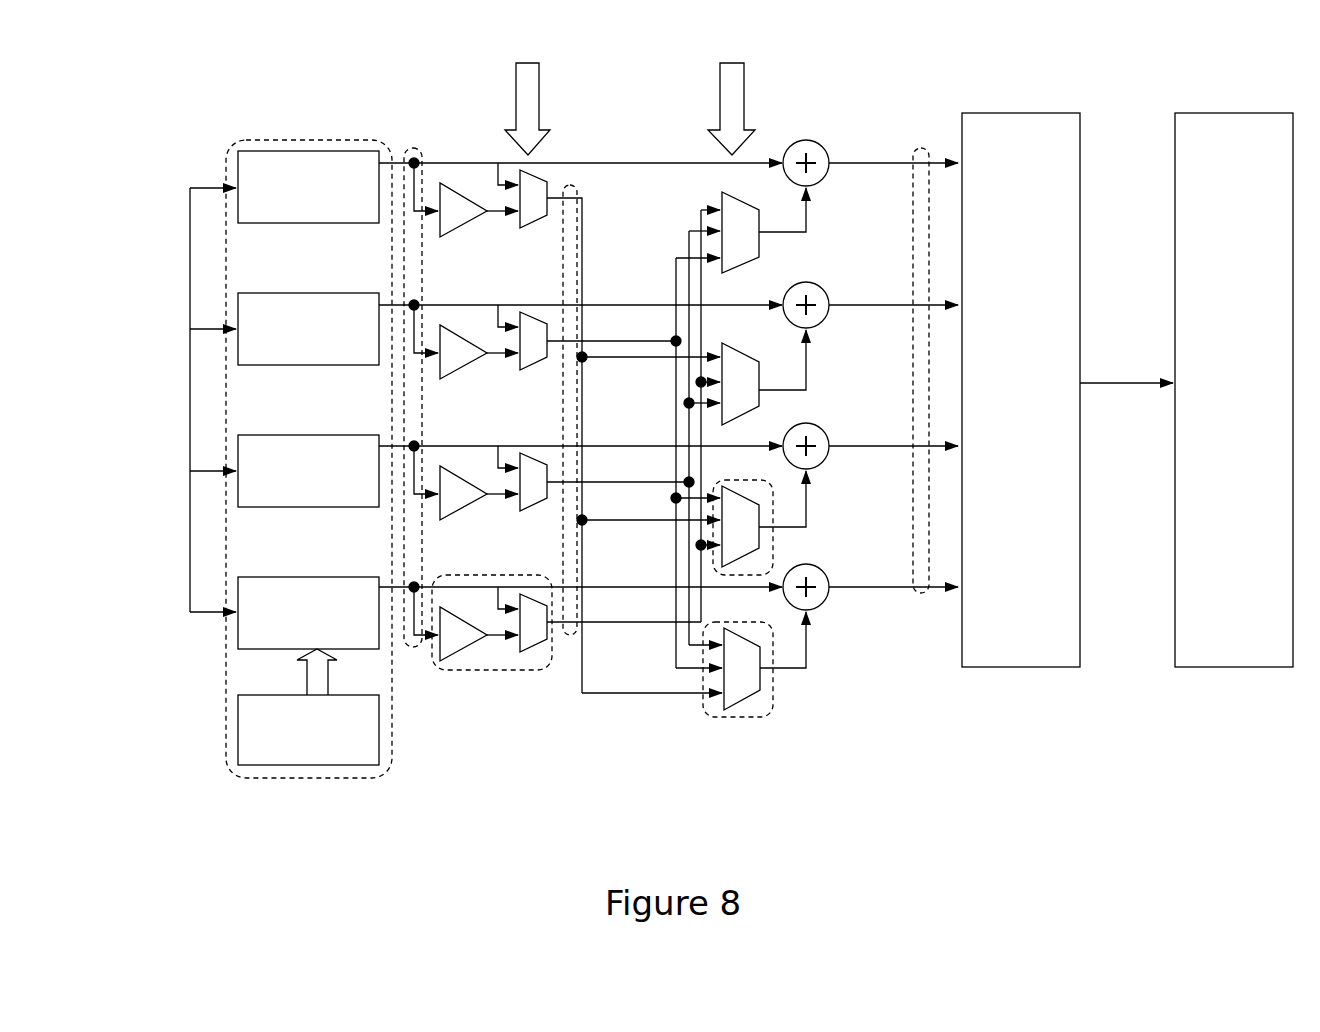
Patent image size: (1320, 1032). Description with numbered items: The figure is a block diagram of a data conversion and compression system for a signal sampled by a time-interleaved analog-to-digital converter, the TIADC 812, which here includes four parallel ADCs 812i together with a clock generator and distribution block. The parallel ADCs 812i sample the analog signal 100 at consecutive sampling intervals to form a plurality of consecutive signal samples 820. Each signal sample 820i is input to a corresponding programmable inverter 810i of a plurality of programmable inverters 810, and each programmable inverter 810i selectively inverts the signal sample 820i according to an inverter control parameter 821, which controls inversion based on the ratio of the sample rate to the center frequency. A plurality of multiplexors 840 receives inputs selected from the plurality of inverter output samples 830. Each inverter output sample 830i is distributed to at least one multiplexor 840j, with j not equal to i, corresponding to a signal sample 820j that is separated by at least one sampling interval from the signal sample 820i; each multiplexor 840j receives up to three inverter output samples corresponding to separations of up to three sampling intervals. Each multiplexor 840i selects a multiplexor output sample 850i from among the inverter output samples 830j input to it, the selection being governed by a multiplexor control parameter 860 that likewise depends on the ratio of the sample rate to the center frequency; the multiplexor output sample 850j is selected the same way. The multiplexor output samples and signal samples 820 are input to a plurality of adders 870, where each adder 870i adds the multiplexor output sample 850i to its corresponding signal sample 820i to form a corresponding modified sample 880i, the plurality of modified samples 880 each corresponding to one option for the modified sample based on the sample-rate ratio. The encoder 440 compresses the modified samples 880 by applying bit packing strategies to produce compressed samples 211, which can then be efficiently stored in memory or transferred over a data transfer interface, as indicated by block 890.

The analog signal 100 is at (188, 389).
The TIADC 812 is at (247, 426).
The parallel ADC 812i is at (238, 637).
The consecutive signal samples 820 is at (436, 360).
The signal sample 820j is at (455, 445).
The signal sample 820i is at (452, 578).
The inverter control parameter 821 is at (528, 93).
The inverter output samples 830 is at (634, 412).
The inverter output sample 830j is at (636, 480).
The inverter output sample 830i is at (635, 624).
The multiplexor control parameter 860 is at (732, 93).
The adders 870 is at (824, 393).
The adder 870i is at (818, 605).
The modified samples 880 is at (893, 342).
The modified sample 880i is at (858, 590).
The multiplexor output sample 850j is at (808, 503).
The multiplexor output sample 850i is at (797, 670).
The multiplexors 840 is at (792, 520).
The multiplexor 840j is at (773, 550).
The multiplexor 840i is at (735, 717).
The programmable inverters 810 is at (483, 483).
The programmable inverter 810i is at (489, 672).
The encoder 440 is at (1022, 670).
The compressed samples 211 is at (1127, 392).
The memory or data transfer interface 890 is at (1235, 670).